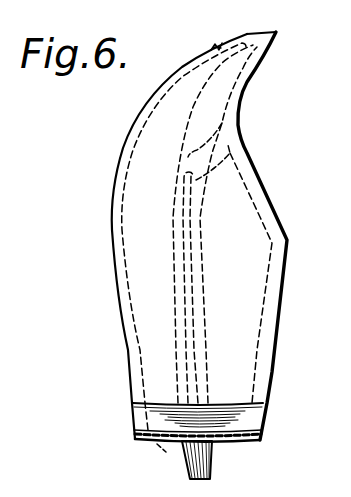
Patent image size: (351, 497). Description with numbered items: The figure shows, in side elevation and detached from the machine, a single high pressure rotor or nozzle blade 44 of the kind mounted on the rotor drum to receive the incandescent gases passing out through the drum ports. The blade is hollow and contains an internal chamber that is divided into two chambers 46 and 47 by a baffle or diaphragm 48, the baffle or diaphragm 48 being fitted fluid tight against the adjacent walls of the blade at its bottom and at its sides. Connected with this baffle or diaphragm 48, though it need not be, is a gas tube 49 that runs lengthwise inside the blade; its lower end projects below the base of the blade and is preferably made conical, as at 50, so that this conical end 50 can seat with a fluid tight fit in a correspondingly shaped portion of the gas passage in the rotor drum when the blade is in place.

The rotor or nozzle blade 44 is at (121, 306).
The chamber 46 is at (138, 255).
The chamber 47 is at (255, 281).
The baffle or diaphragm 48 is at (182, 345).
The gas tube 49 is at (190, 231).
The conical lower end of gas tube 50 is at (205, 461).